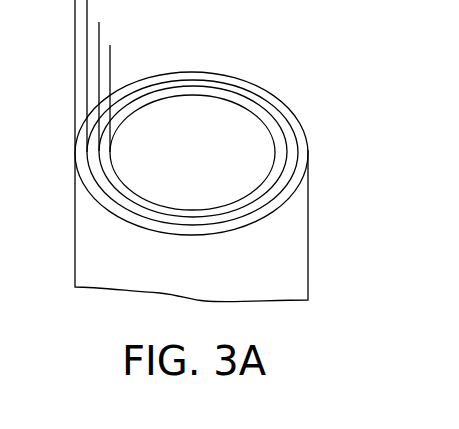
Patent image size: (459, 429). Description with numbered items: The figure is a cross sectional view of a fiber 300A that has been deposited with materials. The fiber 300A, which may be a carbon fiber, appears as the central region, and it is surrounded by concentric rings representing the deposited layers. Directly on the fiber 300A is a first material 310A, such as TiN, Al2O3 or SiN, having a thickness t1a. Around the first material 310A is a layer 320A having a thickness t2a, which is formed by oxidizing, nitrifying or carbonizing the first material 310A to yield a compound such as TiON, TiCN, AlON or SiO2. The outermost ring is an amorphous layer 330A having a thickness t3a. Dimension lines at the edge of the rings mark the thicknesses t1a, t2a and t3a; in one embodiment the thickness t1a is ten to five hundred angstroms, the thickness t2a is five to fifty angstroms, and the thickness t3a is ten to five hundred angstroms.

The fiber 300A is at (213, 164).
The first material 310A is at (271, 132).
The layer 320A is at (227, 88).
The amorphous layer 330A is at (206, 73).
The thickness of first material t1a is at (63, 67).
The thickness of layer t2a is at (53, 37).
The thickness of amorphous layer t3a is at (38, 13).